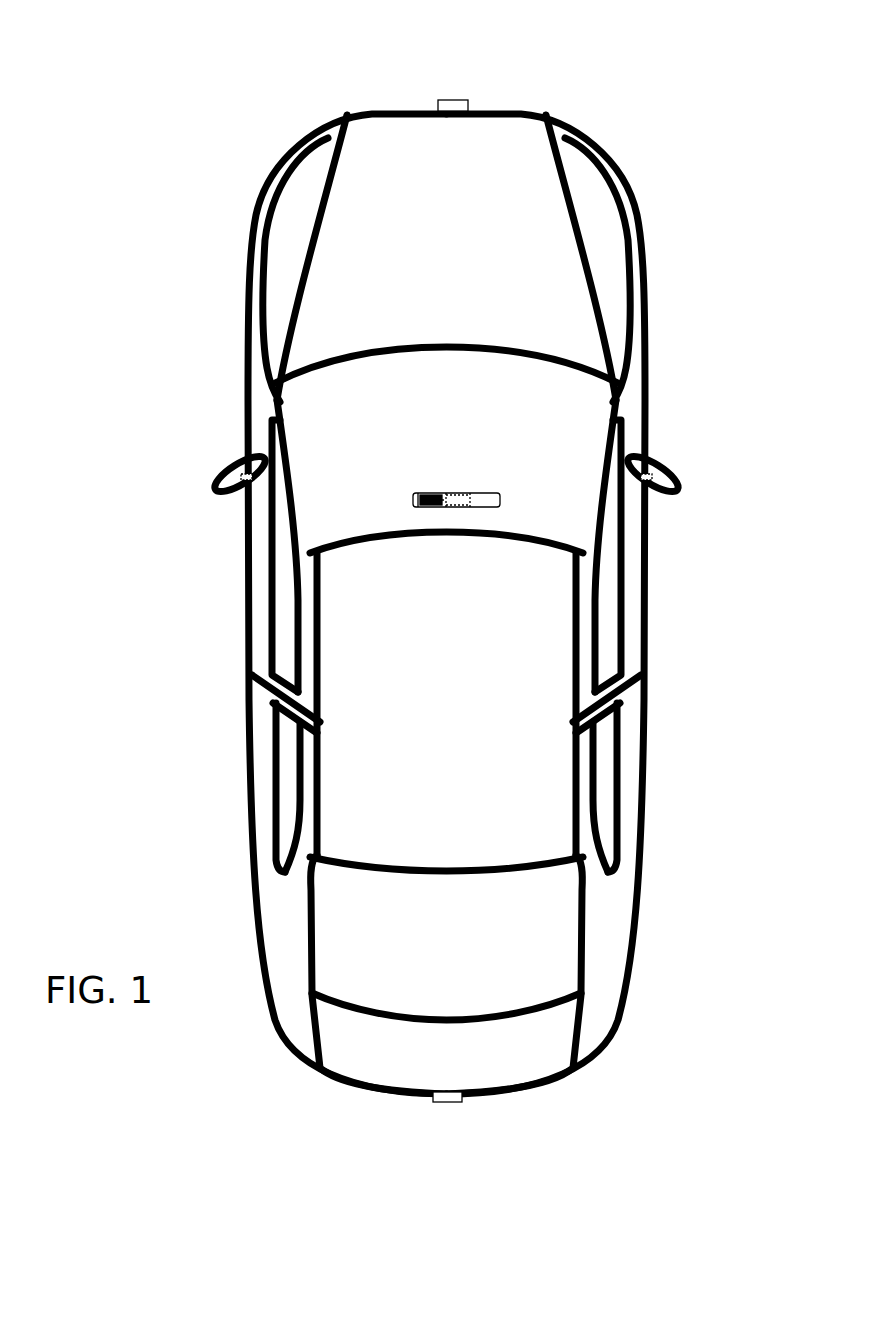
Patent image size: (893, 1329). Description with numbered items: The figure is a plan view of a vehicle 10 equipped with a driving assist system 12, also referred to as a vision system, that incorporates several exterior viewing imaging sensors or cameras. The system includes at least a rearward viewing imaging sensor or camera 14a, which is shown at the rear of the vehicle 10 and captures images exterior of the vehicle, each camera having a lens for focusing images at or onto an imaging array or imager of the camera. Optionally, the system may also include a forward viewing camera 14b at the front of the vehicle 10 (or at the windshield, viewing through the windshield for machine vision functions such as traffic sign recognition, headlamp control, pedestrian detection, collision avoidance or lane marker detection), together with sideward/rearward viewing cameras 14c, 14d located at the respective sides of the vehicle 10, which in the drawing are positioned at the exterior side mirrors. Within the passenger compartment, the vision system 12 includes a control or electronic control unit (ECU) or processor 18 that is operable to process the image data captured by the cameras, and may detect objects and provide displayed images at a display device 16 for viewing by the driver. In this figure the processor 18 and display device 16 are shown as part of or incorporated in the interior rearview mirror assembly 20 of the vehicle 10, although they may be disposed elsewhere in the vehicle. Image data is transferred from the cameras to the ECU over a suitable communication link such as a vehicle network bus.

The vehicle 10 is at (194, 190).
The driving assist system 12 is at (398, 1123).
The rearward viewing imaging sensor or camera 14a is at (450, 1099).
The forward viewing camera 14b is at (458, 100).
The sideward/rearward viewing camera 14c is at (236, 473).
The sideward/rearward viewing camera 14d is at (657, 473).
The display device 16 is at (432, 497).
The electronic control unit (ECU) or processor 18 is at (452, 497).
The interior rearview mirror assembly 20 is at (500, 494).